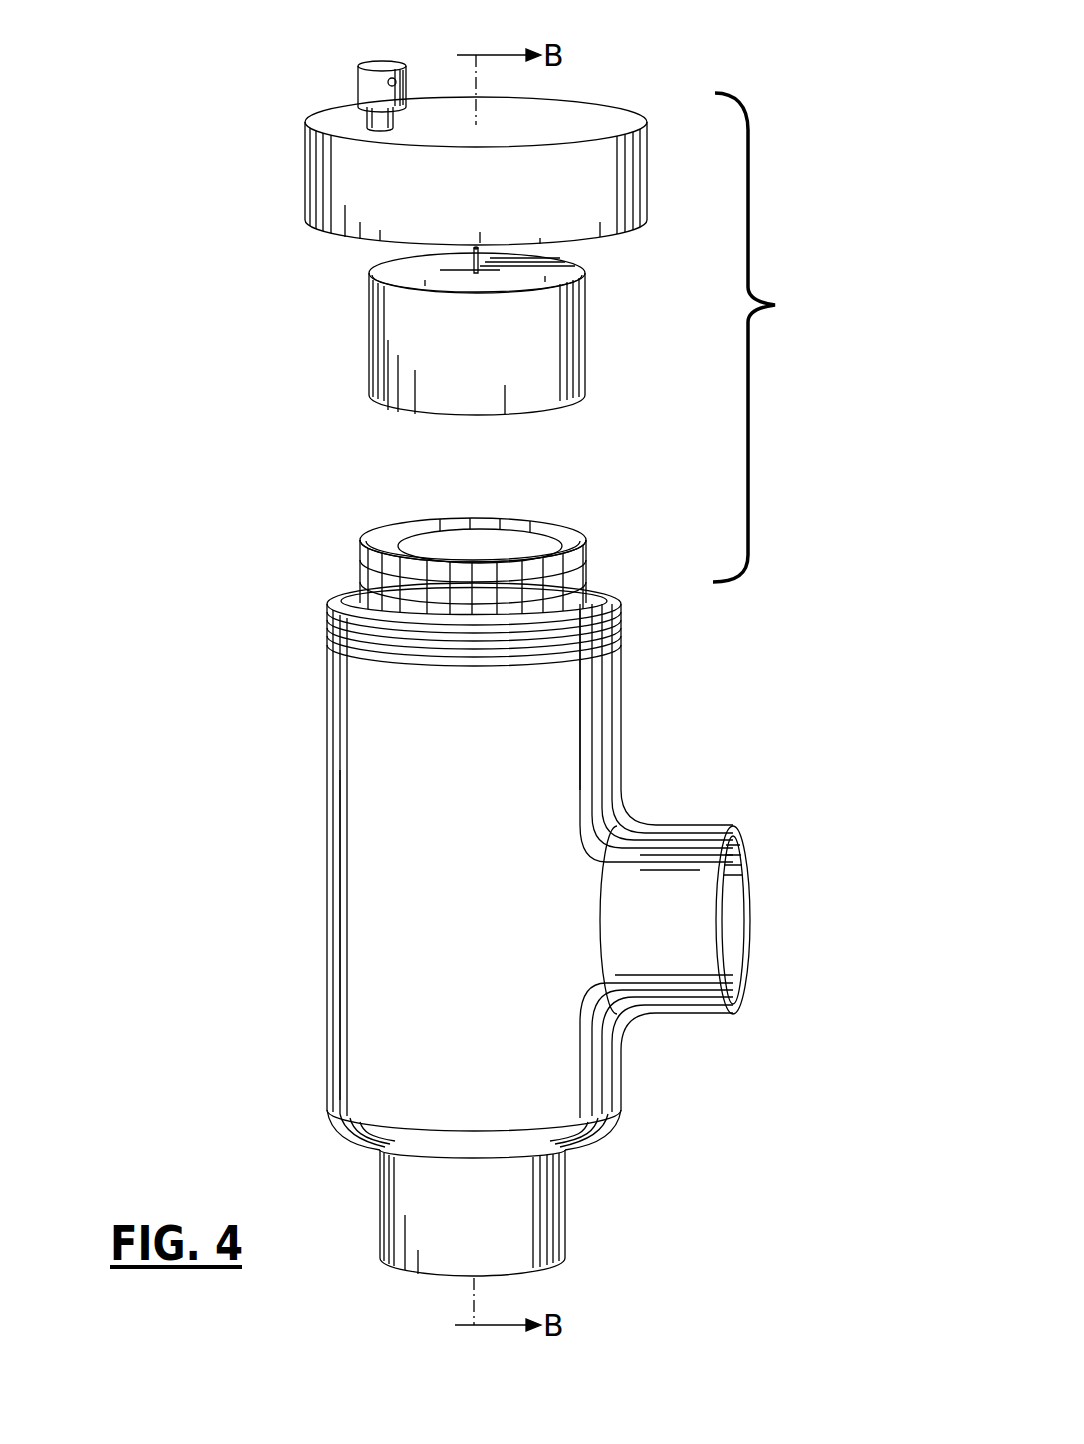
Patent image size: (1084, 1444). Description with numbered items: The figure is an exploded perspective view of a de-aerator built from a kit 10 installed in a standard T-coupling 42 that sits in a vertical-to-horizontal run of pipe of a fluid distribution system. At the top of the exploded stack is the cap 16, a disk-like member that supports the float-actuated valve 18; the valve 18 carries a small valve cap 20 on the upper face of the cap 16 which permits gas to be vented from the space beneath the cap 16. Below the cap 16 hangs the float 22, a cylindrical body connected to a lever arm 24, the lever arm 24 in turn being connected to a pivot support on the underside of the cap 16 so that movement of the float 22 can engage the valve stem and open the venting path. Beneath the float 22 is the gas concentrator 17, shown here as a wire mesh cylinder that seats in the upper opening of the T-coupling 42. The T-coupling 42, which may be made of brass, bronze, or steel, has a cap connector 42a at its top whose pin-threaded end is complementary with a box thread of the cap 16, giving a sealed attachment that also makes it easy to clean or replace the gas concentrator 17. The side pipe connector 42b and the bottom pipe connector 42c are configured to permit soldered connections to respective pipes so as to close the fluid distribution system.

The kit 10 is at (767, 337).
The cap 16 is at (298, 178).
The gas concentrator 17 is at (587, 530).
The valve 18 is at (360, 117).
The valve cap 20 is at (373, 62).
The float 22 is at (543, 267).
The lever arm 24 is at (474, 256).
The T-coupling 42 is at (604, 954).
The cap connector 42a is at (620, 588).
The pipe connector 42b is at (747, 830).
The pipe connector 42c is at (542, 1273).